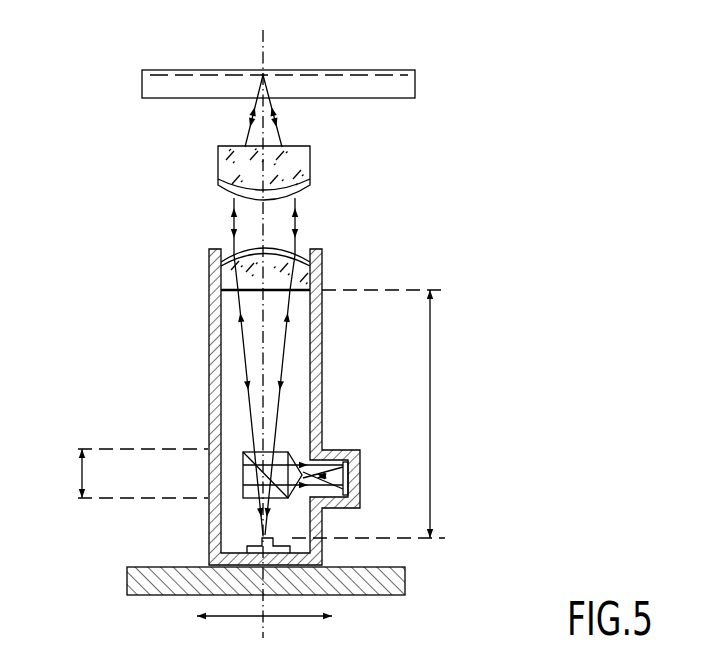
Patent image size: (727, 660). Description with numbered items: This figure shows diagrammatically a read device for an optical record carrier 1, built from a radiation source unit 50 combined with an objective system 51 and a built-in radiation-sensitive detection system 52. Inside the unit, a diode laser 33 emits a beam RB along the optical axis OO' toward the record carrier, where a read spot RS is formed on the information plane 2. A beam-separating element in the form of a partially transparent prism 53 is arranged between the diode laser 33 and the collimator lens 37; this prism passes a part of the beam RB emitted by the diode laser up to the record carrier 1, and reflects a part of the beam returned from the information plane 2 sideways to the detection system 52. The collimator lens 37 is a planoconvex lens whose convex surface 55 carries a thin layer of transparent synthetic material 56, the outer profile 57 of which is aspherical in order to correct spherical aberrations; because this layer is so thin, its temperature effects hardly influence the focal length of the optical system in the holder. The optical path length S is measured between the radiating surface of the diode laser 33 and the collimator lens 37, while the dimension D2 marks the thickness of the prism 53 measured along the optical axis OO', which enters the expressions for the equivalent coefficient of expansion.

The record carrier 1 is at (386, 54).
The information plane 2 is at (347, 76).
The read spot RS is at (265, 74).
The optical axis O is at (272, 25).
The optical axis O' is at (273, 638).
The objective system 51 is at (302, 162).
The aspherical outer profile 57 is at (232, 251).
The thin layer of transparent synthetic material 56 is at (222, 258).
The convex surface 55 is at (222, 278).
The collimator lens 37 is at (310, 278).
The beam RB is at (280, 365).
The radiation source unit 50 is at (323, 366).
The radiation-sensitive detection system 52 is at (341, 460).
The partially transparent prism 53 is at (248, 478).
The diode laser 33 is at (262, 542).
The optical path length S is at (370, 414).
The dimension D2 is at (131, 473).